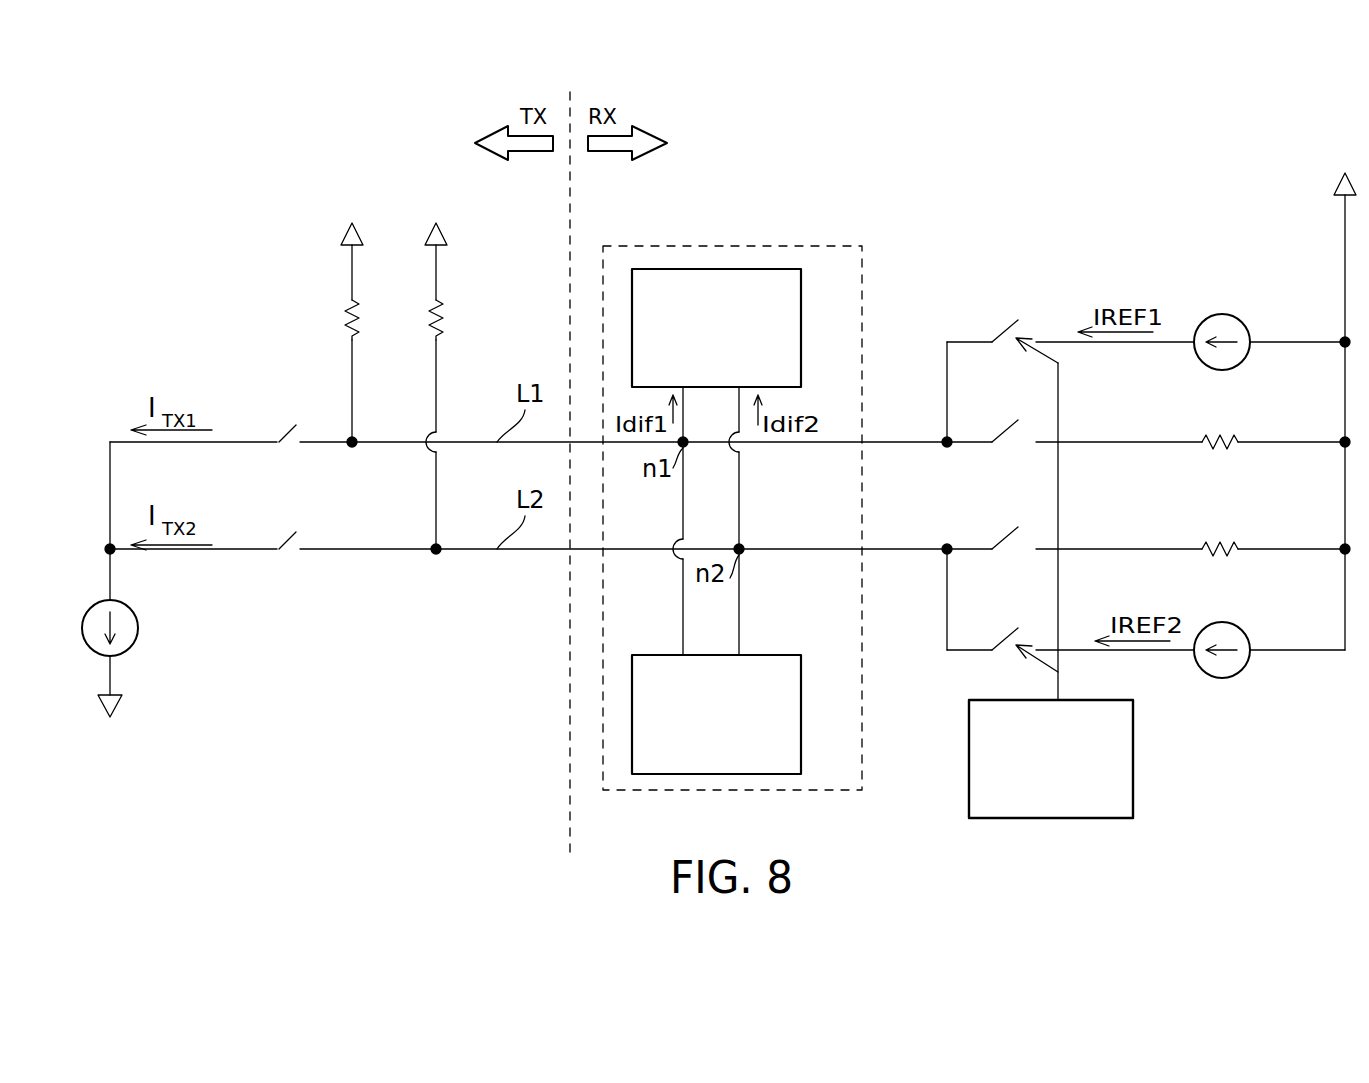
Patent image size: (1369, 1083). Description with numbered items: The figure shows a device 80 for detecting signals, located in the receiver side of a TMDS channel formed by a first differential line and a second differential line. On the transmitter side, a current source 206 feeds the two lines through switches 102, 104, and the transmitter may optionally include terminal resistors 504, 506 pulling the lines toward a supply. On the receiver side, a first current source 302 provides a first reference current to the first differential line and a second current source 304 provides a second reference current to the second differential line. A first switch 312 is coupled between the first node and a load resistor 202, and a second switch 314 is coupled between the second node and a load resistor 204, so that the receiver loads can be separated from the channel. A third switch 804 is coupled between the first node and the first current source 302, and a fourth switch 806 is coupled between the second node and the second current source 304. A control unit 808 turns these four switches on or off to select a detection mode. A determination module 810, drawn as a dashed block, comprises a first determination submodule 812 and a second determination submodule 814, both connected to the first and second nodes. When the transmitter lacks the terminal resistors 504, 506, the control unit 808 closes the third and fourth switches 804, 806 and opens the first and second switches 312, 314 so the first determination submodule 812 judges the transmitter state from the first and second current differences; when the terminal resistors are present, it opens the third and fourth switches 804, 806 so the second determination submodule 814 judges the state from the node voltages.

The device for detecting signals 80 is at (1219, 124).
The switch 102 is at (283, 429).
The switch 104 is at (283, 536).
The resistor 202 is at (1222, 437).
The resistor 204 is at (1222, 544).
The current source 206 is at (139, 628).
The first current source 302 is at (1240, 319).
The second current source 304 is at (1240, 628).
The first switch 312 is at (1003, 428).
The second switch 314 is at (1003, 531).
The terminal resistor 504 is at (347, 325).
The terminal resistor 506 is at (430, 328).
The third switch 804 is at (1003, 327).
The fourth switch 806 is at (1003, 633).
The control unit 808 is at (1133, 767).
The determination module 810 is at (692, 246).
The first determination submodule 812 is at (757, 269).
The second determination submodule 814 is at (802, 687).